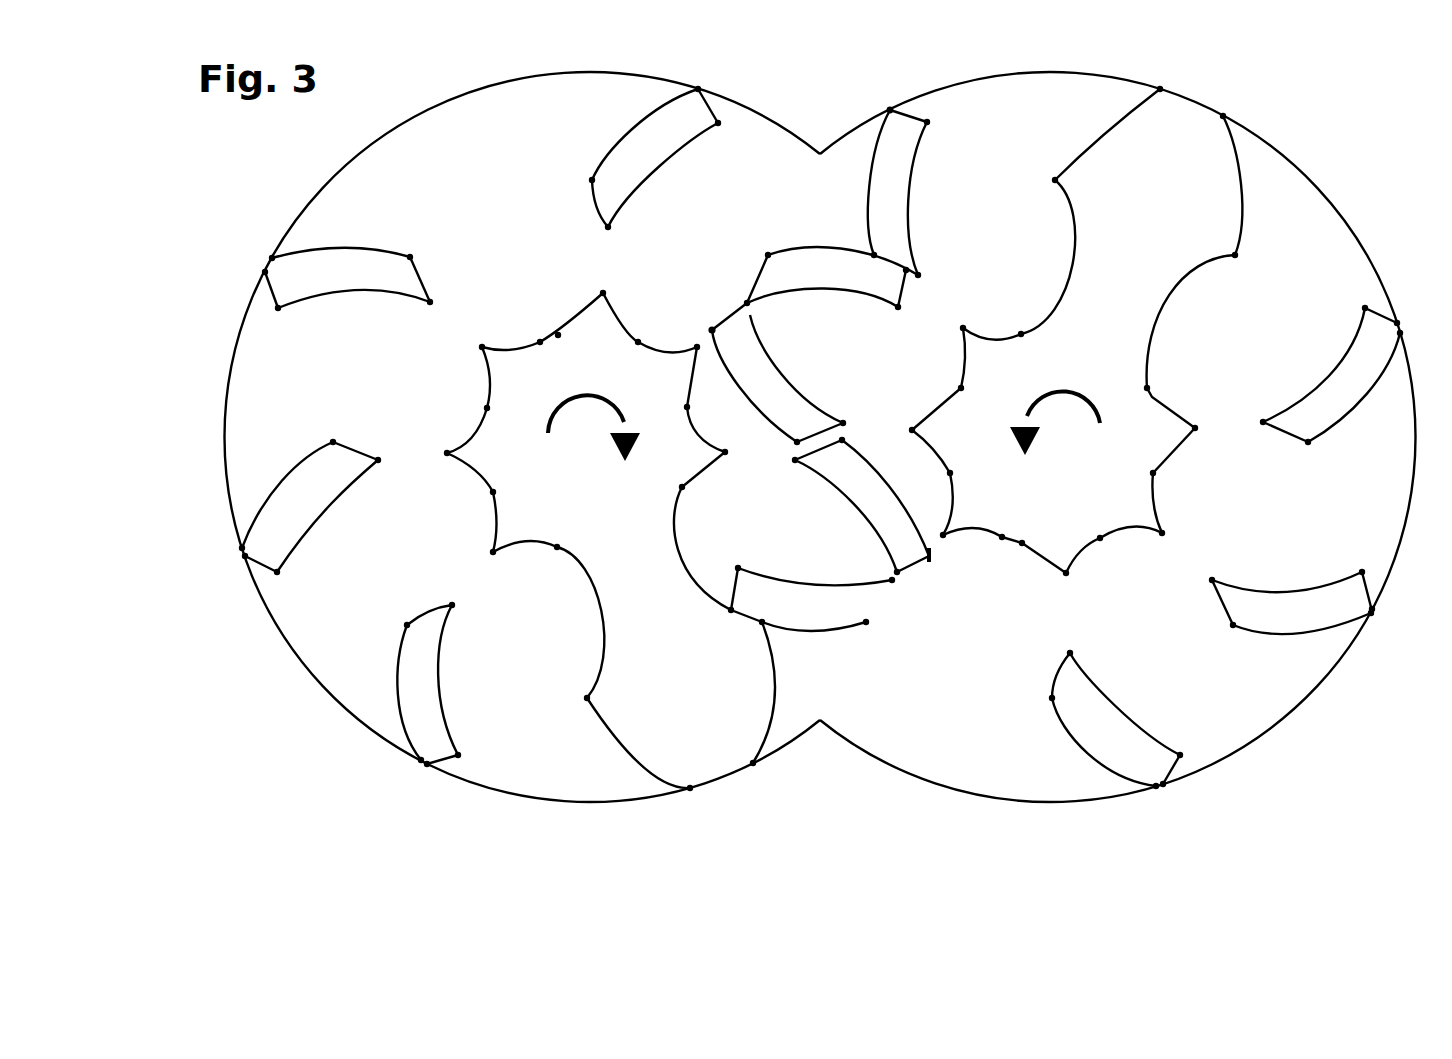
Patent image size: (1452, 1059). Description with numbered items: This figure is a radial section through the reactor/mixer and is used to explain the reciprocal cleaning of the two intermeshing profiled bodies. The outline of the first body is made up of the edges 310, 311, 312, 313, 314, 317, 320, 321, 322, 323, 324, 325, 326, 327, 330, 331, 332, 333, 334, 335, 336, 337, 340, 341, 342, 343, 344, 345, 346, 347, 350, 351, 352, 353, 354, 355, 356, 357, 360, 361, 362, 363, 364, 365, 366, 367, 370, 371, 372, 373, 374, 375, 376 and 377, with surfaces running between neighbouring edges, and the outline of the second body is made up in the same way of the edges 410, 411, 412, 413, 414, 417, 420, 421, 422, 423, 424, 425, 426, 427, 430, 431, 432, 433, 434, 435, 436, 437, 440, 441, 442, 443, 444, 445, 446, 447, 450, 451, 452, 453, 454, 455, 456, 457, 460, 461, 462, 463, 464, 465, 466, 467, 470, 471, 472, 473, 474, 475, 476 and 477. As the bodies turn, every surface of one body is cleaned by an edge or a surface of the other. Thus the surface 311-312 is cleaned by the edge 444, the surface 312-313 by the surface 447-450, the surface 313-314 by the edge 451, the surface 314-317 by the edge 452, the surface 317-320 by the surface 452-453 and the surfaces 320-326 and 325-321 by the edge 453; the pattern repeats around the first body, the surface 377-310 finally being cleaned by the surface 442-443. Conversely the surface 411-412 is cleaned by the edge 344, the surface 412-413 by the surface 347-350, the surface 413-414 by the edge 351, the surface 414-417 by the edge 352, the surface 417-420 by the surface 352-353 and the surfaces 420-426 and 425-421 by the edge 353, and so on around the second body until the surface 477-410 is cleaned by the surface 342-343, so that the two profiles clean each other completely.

The rotor profile point 310 is at (1046, 261).
The rotor profile point 311 is at (1087, 143).
The rotor profile point 312 is at (1118, 426).
The rotor profile point 313 is at (1234, 167).
The rotor profile point 314 is at (1216, 316).
The rotor profile point 317 is at (1148, 369).
The profile segment 320 is at (1169, 408).
The rotor profile point 321 is at (1330, 346).
The rotor profile point 322 is at (1418, 308).
The rotor profile point 323 is at (1377, 380).
The rotor profile point 324 is at (1313, 456).
The rotor profile point 325 is at (1272, 413).
The rotor profile point 326 is at (1196, 442).
The rotor profile point 327 is at (1164, 457).
The profile segment 330 is at (1156, 503).
The rotor profile point 331 is at (1301, 574).
The rotor profile point 332 is at (1399, 598).
The rotor profile point 333 is at (1324, 622).
The rotor profile point 334 is at (1211, 629).
The rotor profile point 335 is at (1221, 585).
The rotor profile point 336 is at (1154, 531).
The profile curve 337 is at (1107, 552).
The rotor profile point 340 is at (1089, 523).
The rotor profile point 341 is at (1189, 753).
The rotor profile point 342 is at (1187, 794).
The rotor profile point 343 is at (1149, 803).
The rotor profile point 344 is at (1080, 734).
The rotor profile point 345 is at (1115, 687).
The rotor profile point 346 is at (1056, 577).
The rotor profile point 347 is at (1026, 532).
The rotor profile point 350 is at (976, 520).
The rotor profile point 351 is at (838, 635).
The profile segment 352 is at (733, 626).
The rotor profile point 353 is at (713, 590).
The rotor profile point 354 is at (808, 563).
The rotor profile point 355 is at (896, 595).
The rotor profile point 356 is at (965, 545).
The profile curve 357 is at (971, 501).
The rotor profile point 360 is at (971, 457).
The rotor profile point 361 is at (804, 425).
The profile curve 362 is at (754, 386).
The rotor profile point 363 is at (713, 312).
The profile curve 364 is at (792, 363).
The rotor profile point 365 is at (854, 407).
The rotor profile point 366 is at (909, 443).
The profile segment 367 is at (947, 409).
The rotor profile point 370 is at (961, 359).
The rotor profile point 371 is at (878, 239).
The rotor profile point 372 is at (865, 174).
The rotor profile point 373 is at (903, 97).
The rotor profile point 374 is at (943, 189).
The rotor profile point 375 is at (938, 261).
The rotor profile point 376 is at (964, 312).
The profile curve 377 is at (993, 348).
The rotor profile point 410 is at (581, 611).
The rotor profile point 411 is at (615, 732).
The rotor profile point 412 is at (701, 805).
The rotor profile point 413 is at (769, 710).
The rotor profile point 414 is at (773, 607).
The profile curve 417 is at (697, 548).
The profile segment 420 is at (703, 472).
The rotor profile point 421 is at (876, 560).
The profile segment 422 is at (930, 570).
The profile curve 423 is at (889, 501).
The rotor profile point 424 is at (861, 457).
The rotor profile point 425 is at (823, 506).
The rotor profile point 426 is at (728, 458).
The profile curve 427 is at (682, 429).
The rotor profile point 430 is at (664, 407).
The rotor profile point 431 is at (834, 313).
The profile segment 432 is at (918, 289).
The rotor profile point 433 is at (885, 273).
The rotor profile point 434 is at (830, 262).
The rotor profile point 435 is at (733, 287).
The rotor profile point 436 is at (689, 375).
The profile curve 437 is at (652, 364).
The rotor profile point 440 is at (637, 319).
The rotor profile point 441 is at (680, 173).
The outer tip arc 442 is at (522, 437).
The rotor profile point 443 is at (681, 90).
The rotor profile point 444 is at (621, 143).
The rotor profile point 445 is at (613, 220).
The rotor profile point 446 is at (585, 300).
The rotor profile point 447 is at (558, 319).
The rotor profile point 450 is at (526, 360).
The rotor profile point 451 is at (413, 261).
The rotor profile point 452 is at (330, 245).
The rotor profile point 453 is at (244, 275).
The rotor profile point 454 is at (281, 309).
The rotor profile point 455 is at (378, 301).
The rotor profile point 456 is at (473, 332).
The profile curve 457 is at (463, 377).
The rotor profile point 460 is at (463, 421).
The rotor profile point 461 is at (310, 477).
The rotor profile point 462 is at (229, 530).
The rotor profile point 463 is at (225, 569).
The rotor profile point 464 is at (277, 581).
The rotor profile point 465 is at (340, 514).
The rotor profile point 466 is at (449, 463).
The rotor profile point 467 is at (509, 473).
The profile segment 470 is at (504, 522).
The rotor profile point 471 is at (391, 681).
The rotor profile point 472 is at (395, 769).
The rotor profile point 473 is at (439, 777).
The rotor profile point 474 is at (467, 752).
The rotor profile point 475 is at (440, 662).
The rotor profile point 476 is at (472, 550).
The profile curve 477 is at (525, 559).